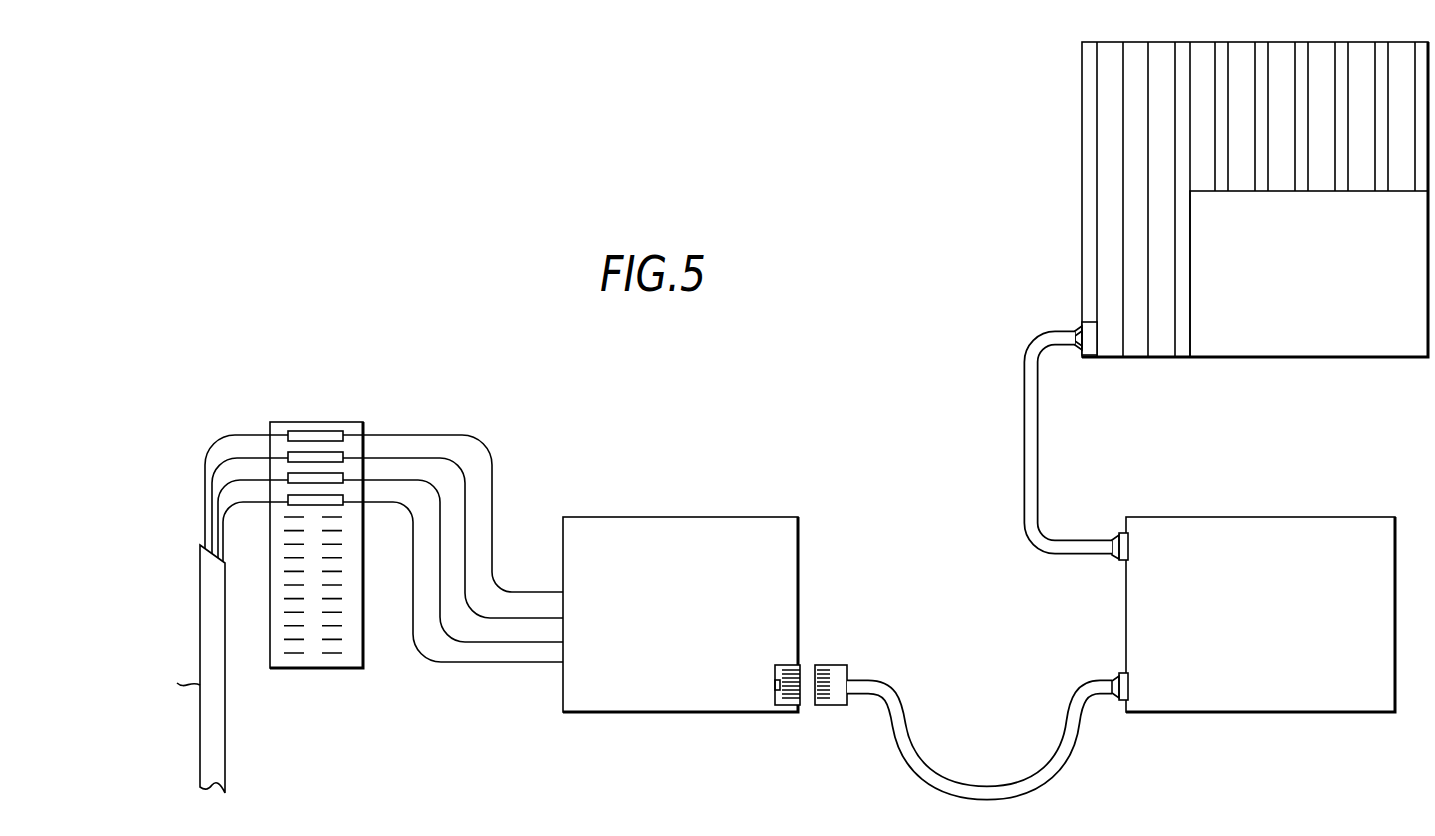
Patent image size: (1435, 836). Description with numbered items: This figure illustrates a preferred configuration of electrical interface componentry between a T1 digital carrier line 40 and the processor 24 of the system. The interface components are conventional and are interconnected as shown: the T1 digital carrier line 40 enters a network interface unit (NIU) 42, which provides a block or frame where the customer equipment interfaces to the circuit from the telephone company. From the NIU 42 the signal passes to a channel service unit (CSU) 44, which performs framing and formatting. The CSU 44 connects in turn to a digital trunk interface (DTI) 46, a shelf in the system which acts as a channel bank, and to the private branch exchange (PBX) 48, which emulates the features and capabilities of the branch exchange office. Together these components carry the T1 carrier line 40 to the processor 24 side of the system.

The processor 24 is at (1329, 383).
The T1 digital carrier line 40 is at (215, 447).
The network interface unit (NIU) 42 is at (689, 516).
The channel service unit (CSU) 44 is at (1292, 516).
The digital trunk interface (DTI) 46 is at (1110, 219).
The private branch exchange (PBX) 48 is at (1283, 360).